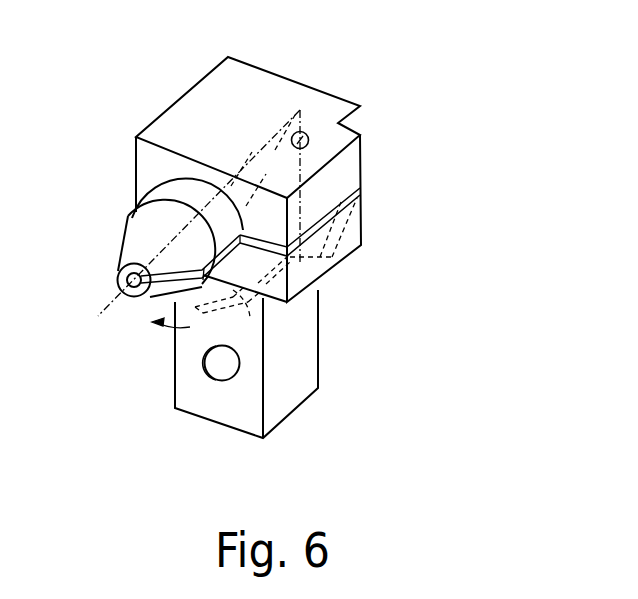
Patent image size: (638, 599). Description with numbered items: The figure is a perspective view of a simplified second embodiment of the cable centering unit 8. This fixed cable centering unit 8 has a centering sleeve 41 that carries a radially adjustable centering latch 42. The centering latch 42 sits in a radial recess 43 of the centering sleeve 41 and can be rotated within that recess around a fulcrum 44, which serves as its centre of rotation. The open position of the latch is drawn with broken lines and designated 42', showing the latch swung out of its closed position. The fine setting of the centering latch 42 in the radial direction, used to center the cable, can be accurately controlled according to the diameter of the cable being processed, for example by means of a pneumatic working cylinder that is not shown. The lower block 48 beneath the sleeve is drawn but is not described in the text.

The cable centering unit 8 is at (470, 172).
The centering sleeve 41 is at (167, 198).
The centering latch 42 is at (162, 327).
The centering latch in open position 42' is at (297, 352).
The radial recess 43 is at (362, 190).
The fulcrum 44 is at (307, 133).
The lower block 48 is at (208, 402).